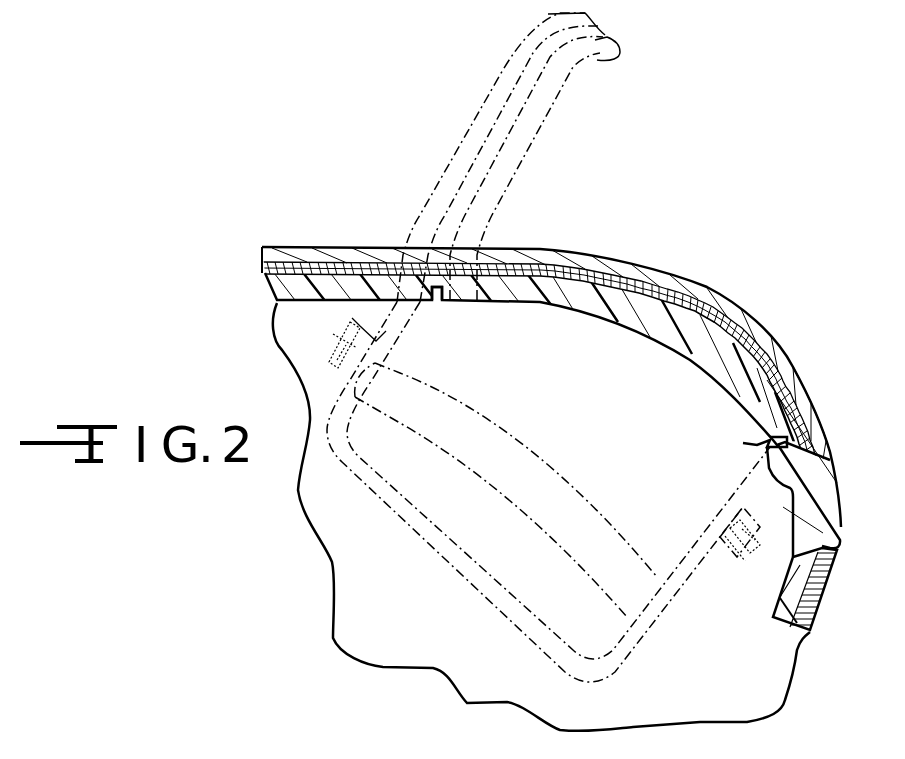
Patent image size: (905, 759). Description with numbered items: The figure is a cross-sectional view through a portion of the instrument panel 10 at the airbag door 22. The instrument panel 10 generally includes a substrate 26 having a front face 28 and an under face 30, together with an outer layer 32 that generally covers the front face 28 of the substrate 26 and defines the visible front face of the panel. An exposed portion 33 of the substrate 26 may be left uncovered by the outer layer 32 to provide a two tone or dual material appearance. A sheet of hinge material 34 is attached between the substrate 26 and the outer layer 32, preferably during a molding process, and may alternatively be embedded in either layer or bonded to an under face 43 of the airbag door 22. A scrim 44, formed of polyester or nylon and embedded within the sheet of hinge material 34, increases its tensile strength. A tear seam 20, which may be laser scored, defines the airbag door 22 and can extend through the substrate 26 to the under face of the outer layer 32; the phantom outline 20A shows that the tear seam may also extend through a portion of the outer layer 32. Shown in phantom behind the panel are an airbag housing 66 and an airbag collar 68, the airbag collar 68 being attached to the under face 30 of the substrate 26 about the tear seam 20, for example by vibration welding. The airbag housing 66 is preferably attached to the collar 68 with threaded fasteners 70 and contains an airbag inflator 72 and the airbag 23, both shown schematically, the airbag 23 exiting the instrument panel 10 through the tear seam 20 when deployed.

The instrument panel 10 is at (311, 220).
The tear seam 20 is at (436, 300).
The phantom outline 20A is at (822, 440).
The airbag door 22 is at (521, 303).
The airbag 23 is at (627, 587).
The substrate 26 is at (275, 305).
The front face 28 is at (617, 253).
The under face 30 is at (315, 301).
The outer layer 32 is at (350, 247).
The exposed portion 33 is at (840, 498).
The sheet of hinge material 34 is at (573, 253).
The under face 43 is at (602, 318).
The scrim 44 is at (262, 268).
The airbag housing 66 is at (430, 545).
The airbag collar 68 is at (745, 470).
The threaded fasteners 70 is at (724, 550).
The airbag inflator 72 is at (537, 588).